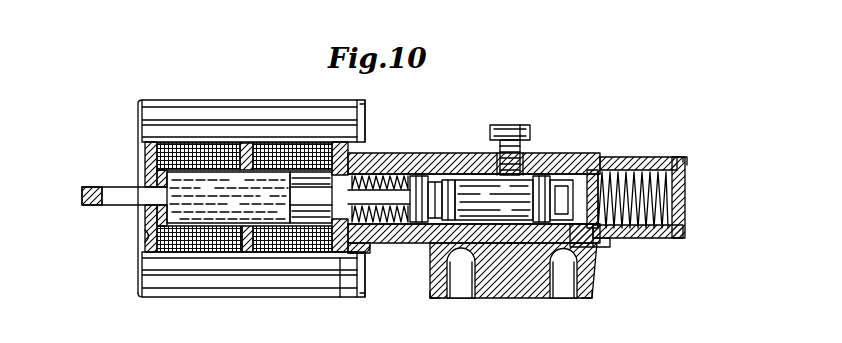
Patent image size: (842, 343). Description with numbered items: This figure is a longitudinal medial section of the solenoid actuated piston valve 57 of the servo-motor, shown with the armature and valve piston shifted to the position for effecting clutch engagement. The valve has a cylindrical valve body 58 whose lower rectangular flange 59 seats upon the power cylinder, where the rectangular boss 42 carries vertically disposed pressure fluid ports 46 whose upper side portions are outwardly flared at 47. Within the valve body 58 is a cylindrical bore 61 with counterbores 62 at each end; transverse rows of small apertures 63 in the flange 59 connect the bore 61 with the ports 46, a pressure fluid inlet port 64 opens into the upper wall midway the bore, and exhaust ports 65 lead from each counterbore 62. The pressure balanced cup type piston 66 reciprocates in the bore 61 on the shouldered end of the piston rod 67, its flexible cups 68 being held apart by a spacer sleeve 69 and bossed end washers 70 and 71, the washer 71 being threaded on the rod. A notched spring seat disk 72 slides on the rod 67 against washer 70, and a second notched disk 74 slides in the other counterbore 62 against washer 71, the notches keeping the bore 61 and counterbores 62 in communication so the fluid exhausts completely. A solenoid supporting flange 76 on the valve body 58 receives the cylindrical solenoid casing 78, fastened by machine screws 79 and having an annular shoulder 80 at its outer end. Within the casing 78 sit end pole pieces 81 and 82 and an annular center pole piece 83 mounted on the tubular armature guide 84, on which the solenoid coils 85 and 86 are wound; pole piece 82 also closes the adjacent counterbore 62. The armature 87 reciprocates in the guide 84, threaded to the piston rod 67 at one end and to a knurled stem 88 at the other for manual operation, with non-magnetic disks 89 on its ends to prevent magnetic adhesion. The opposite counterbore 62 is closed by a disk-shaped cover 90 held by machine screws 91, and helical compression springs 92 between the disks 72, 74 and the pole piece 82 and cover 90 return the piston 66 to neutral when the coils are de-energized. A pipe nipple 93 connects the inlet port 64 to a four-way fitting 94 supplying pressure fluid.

The rectangular boss 42 is at (580, 297).
The pressure fluid ports 46 is at (432, 292).
The outwardly flared side portions 47 is at (458, 290).
The solenoid actuated piston valve 57 is at (475, 107).
The valve body 58 is at (620, 157).
The rectangular flange 59 is at (595, 243).
The cylindrical bore 61 is at (513, 290).
The counterbores 62 is at (393, 153).
The rows of apertures 63 is at (448, 231).
The pressure fluid inlet port 64 is at (490, 170).
The pressure fluid exhaust ports 65 is at (400, 246).
The flexible cup type piston 66 is at (490, 228).
The piston rod 67 is at (317, 200).
The flexible cups 68 is at (449, 190).
The spacer sleeve 69 is at (505, 203).
The bossed end washer 70 is at (430, 192).
The bossed end washer 71 is at (563, 192).
The spring seat disk 72 is at (420, 192).
The spring seat disk 74 is at (588, 160).
The solenoid supporting flange 76 is at (368, 140).
The solenoid casing 78 is at (218, 108).
The machine screws 79 is at (365, 103).
The annular shoulder 80 is at (150, 236).
The end pole piece 81 is at (148, 168).
The end pole piece 82 is at (336, 253).
The center pole piece 83 is at (247, 240).
The tubular armature guide 84 is at (283, 240).
The solenoid coil 85 is at (187, 143).
The solenoid coil 86 is at (280, 155).
The armature 87 is at (210, 213).
The knurled stem 88 is at (110, 208).
The non-magnetic disks 89 is at (305, 150).
The disk-shaped cover 90 is at (685, 177).
The machine screws 91 is at (686, 158).
The helical compression springs 92 is at (377, 173).
The pipe nipple 93 is at (532, 152).
The four-way fitting 94 is at (510, 126).